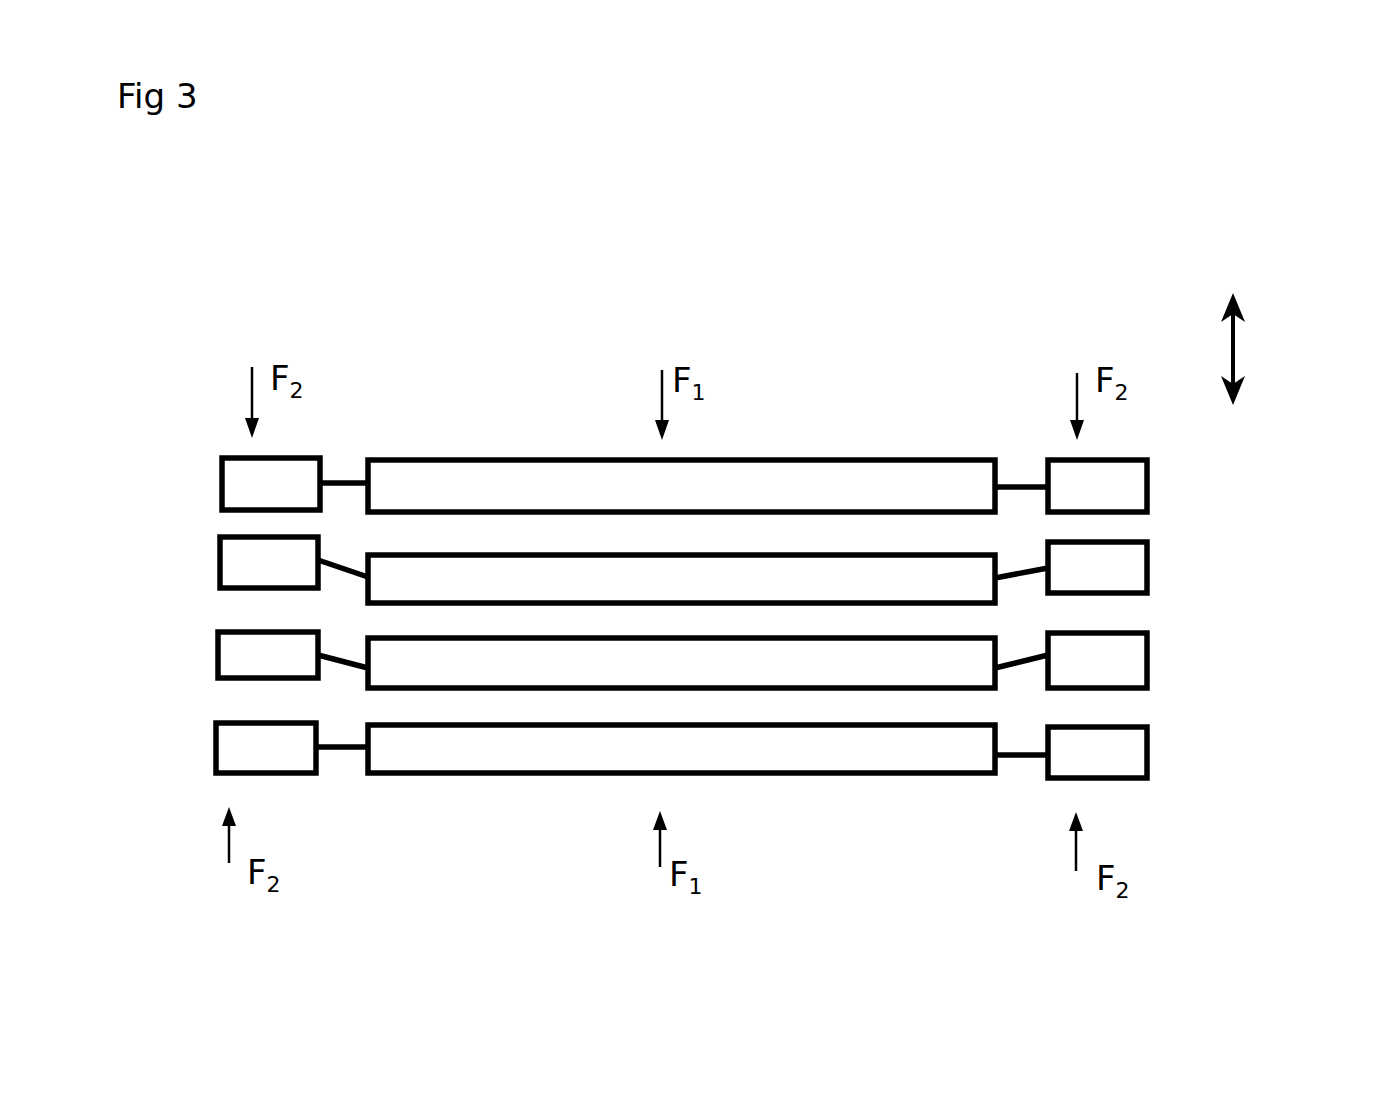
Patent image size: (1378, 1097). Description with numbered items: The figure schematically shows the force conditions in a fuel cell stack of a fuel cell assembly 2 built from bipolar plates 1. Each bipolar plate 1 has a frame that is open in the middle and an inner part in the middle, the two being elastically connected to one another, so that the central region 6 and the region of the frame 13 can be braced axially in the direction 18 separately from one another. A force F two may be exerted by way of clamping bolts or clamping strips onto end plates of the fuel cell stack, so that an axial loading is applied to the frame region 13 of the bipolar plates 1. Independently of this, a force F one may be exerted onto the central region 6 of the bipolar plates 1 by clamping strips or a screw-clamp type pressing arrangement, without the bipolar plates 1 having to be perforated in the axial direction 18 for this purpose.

The bipolar plate 1 is at (198, 615).
The fuel cell assembly 2 is at (1203, 661).
The central region 6 is at (372, 363).
The region of the frame 13 is at (233, 345).
The axial direction 18 is at (1299, 349).